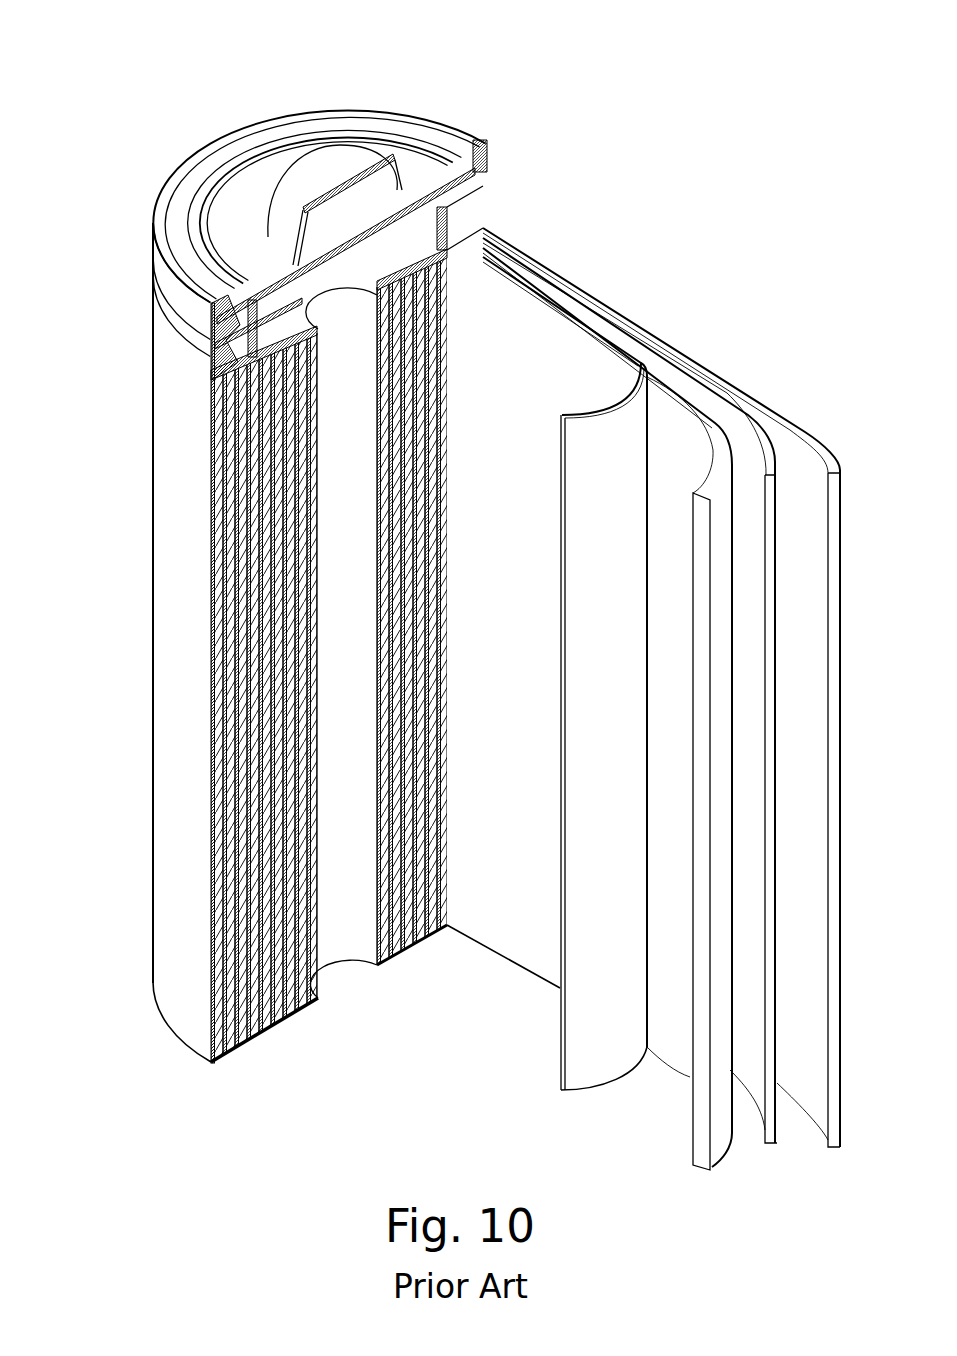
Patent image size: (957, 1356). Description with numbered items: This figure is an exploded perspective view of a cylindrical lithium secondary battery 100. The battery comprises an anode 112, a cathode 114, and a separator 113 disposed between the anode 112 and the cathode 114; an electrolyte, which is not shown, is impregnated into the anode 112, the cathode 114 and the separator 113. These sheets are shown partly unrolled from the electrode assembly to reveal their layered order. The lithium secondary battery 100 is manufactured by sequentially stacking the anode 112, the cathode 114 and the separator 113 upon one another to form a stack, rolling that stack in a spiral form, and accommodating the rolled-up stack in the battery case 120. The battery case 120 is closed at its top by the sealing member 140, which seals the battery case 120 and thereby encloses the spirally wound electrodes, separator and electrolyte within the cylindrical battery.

The lithium secondary battery 100 is at (430, 35).
The anode 112 is at (807, 433).
The separator 113 is at (605, 418).
The cathode 114 is at (714, 432).
The battery case 120 is at (152, 648).
The sealing member 140 is at (313, 167).